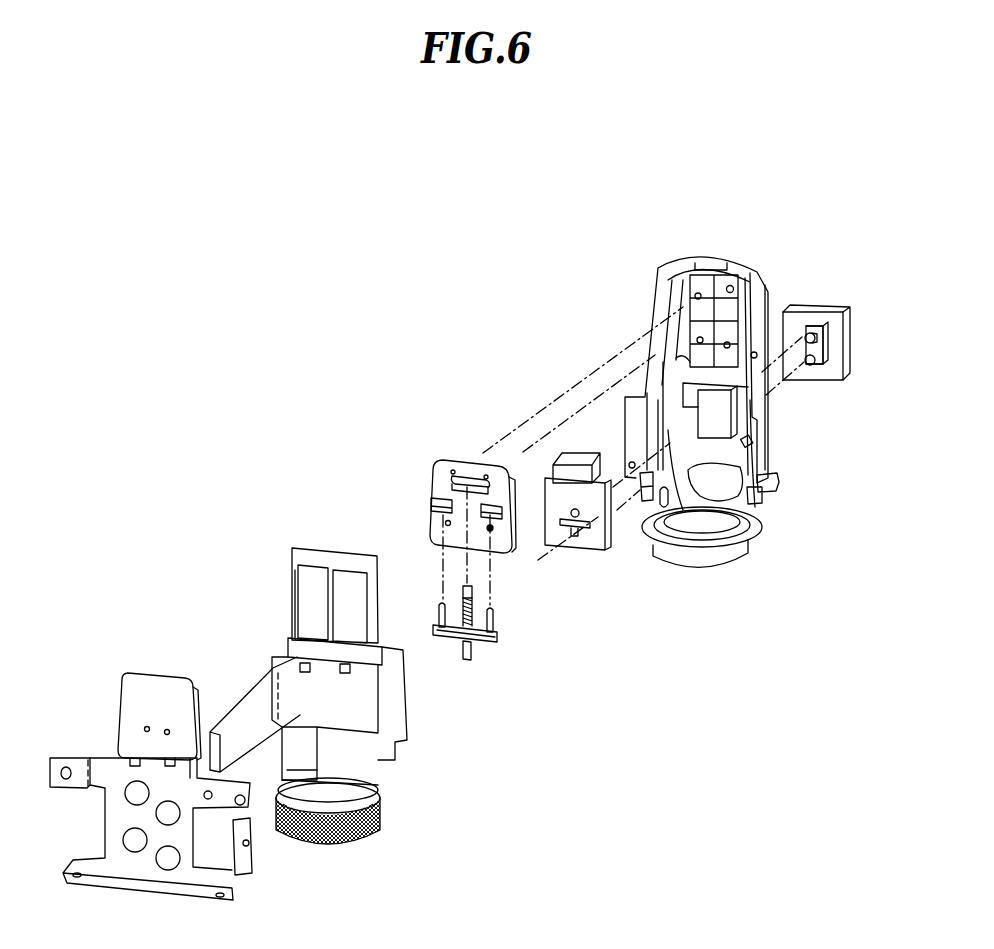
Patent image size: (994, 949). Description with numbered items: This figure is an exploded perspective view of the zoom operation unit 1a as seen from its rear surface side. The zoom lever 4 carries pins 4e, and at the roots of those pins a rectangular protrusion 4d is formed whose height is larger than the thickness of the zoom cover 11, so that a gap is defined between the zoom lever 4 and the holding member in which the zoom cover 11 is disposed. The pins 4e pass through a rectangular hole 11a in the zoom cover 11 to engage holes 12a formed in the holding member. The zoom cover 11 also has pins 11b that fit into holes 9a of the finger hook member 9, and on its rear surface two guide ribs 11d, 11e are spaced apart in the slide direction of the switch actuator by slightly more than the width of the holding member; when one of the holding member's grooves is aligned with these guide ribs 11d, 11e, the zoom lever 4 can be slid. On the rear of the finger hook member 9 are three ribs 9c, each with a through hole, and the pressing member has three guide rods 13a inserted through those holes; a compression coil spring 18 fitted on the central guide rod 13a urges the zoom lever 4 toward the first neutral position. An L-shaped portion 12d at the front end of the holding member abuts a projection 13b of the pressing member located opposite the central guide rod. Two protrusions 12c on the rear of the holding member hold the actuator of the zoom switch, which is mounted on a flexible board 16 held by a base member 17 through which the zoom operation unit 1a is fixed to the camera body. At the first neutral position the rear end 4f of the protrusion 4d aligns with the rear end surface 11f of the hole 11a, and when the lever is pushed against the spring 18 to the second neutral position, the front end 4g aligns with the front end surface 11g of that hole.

The zoom operation unit 1a is at (553, 243).
The zoom cover 11 is at (668, 270).
The rectangular hole 11a is at (705, 400).
The pins 11b is at (732, 285).
The guide rib 11d is at (745, 398).
The guide rib 11e is at (705, 395).
The rear end surface 11f is at (768, 492).
The front end surface 11g is at (688, 360).
The holes 12a is at (572, 537).
The protrusions 12c is at (588, 524).
The L-shaped portion 12d is at (567, 452).
The zoom lever 4 is at (840, 313).
The rectangular protrusion 4d is at (822, 350).
The pins 4e is at (818, 337).
The rear end 4f is at (822, 377).
The front end 4g is at (813, 326).
The finger hook member 9 is at (430, 468).
The holes 9a is at (478, 476).
The ribs 9c is at (433, 503).
The compression coil spring 18 is at (462, 603).
The guide rods 13a is at (494, 617).
The projection 13b is at (467, 644).
The base member 17 is at (160, 690).
The flexible board 16 is at (240, 726).